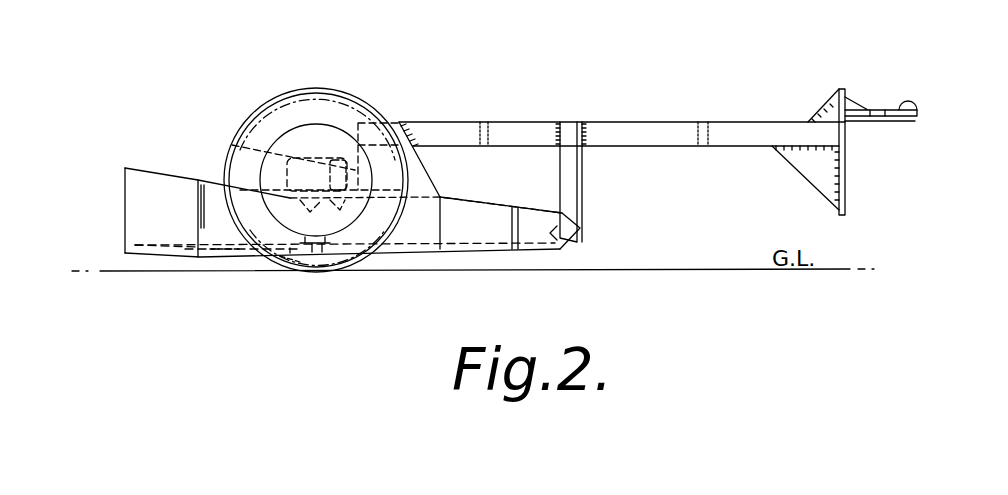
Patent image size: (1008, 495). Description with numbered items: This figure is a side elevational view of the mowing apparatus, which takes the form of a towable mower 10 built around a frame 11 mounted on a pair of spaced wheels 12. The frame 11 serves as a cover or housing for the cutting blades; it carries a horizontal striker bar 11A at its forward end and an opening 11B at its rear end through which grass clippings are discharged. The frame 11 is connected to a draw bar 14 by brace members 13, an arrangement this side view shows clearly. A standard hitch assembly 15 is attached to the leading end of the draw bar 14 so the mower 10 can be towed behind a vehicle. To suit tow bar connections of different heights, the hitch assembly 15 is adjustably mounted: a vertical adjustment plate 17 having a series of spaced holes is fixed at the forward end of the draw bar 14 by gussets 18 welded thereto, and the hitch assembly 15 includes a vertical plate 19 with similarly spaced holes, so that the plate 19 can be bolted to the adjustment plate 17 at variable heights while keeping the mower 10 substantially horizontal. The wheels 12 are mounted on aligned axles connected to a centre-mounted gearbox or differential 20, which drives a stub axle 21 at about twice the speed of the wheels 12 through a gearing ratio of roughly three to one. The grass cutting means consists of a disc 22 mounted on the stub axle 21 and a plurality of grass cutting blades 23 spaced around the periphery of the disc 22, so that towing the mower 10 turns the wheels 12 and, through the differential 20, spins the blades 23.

The towable mower 10 is at (514, 104).
The frame 11 is at (167, 178).
The horizontal striker bar 11A is at (578, 237).
The opening 11B is at (125, 205).
The wheels 12 is at (273, 120).
The brace members 13 is at (403, 130).
The draw bar 14 is at (662, 137).
The hitch assembly 15 is at (910, 96).
The vertical adjustment plate 17 is at (843, 183).
The gussets 18 is at (805, 163).
The vertical plate 19 is at (849, 107).
The differential 20 is at (235, 152).
The stub axle 21 is at (335, 272).
The disc 22 is at (290, 256).
The grass cutting blades 23 is at (227, 256).